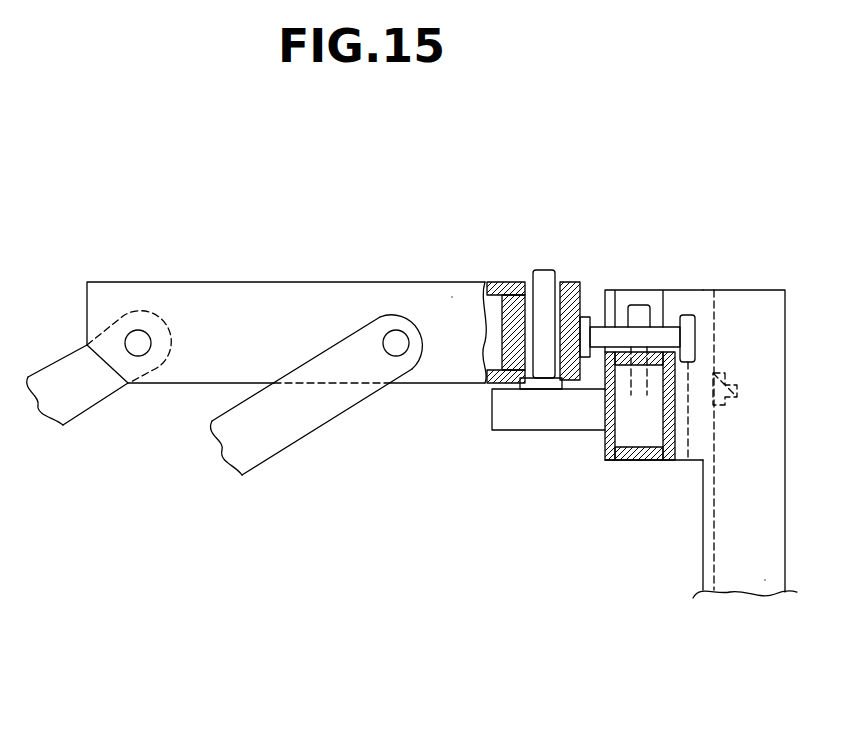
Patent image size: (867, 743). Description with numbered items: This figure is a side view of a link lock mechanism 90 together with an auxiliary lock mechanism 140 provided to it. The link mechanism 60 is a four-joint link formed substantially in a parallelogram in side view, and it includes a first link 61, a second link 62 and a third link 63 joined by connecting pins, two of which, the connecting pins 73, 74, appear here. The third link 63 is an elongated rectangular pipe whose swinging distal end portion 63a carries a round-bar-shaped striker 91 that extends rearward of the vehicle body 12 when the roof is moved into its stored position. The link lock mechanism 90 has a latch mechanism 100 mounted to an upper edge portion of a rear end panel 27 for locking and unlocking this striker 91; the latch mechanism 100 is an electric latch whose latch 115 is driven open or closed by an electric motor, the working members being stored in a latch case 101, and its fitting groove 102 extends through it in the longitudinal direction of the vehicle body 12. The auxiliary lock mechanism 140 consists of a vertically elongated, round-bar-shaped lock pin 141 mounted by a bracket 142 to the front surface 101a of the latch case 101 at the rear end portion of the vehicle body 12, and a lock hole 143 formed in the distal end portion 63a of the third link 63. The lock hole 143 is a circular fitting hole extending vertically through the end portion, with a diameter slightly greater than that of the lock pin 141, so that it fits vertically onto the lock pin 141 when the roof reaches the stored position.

The link mechanism 60 is at (105, 278).
The first link 61 is at (300, 420).
The second link 62 is at (93, 396).
The third link 63 is at (257, 279).
The swinging distal end portion 63a is at (452, 297).
The connecting pin 73 is at (395, 330).
The connecting pin 74 is at (139, 330).
The auxiliary lock mechanism 140 is at (620, 158).
The lock pin 141 is at (538, 318).
The bracket 142 is at (508, 418).
The lock hole 143 is at (531, 322).
The fitting groove 102 is at (667, 328).
The latch 115 is at (642, 304).
The striker 91 is at (692, 313).
The link lock mechanism 90 is at (722, 325).
The latch mechanism 100 is at (650, 465).
The latch case 101 is at (608, 463).
The front surface 101a is at (602, 443).
The vehicle body 12 is at (720, 597).
The rear end panel 27 is at (765, 580).